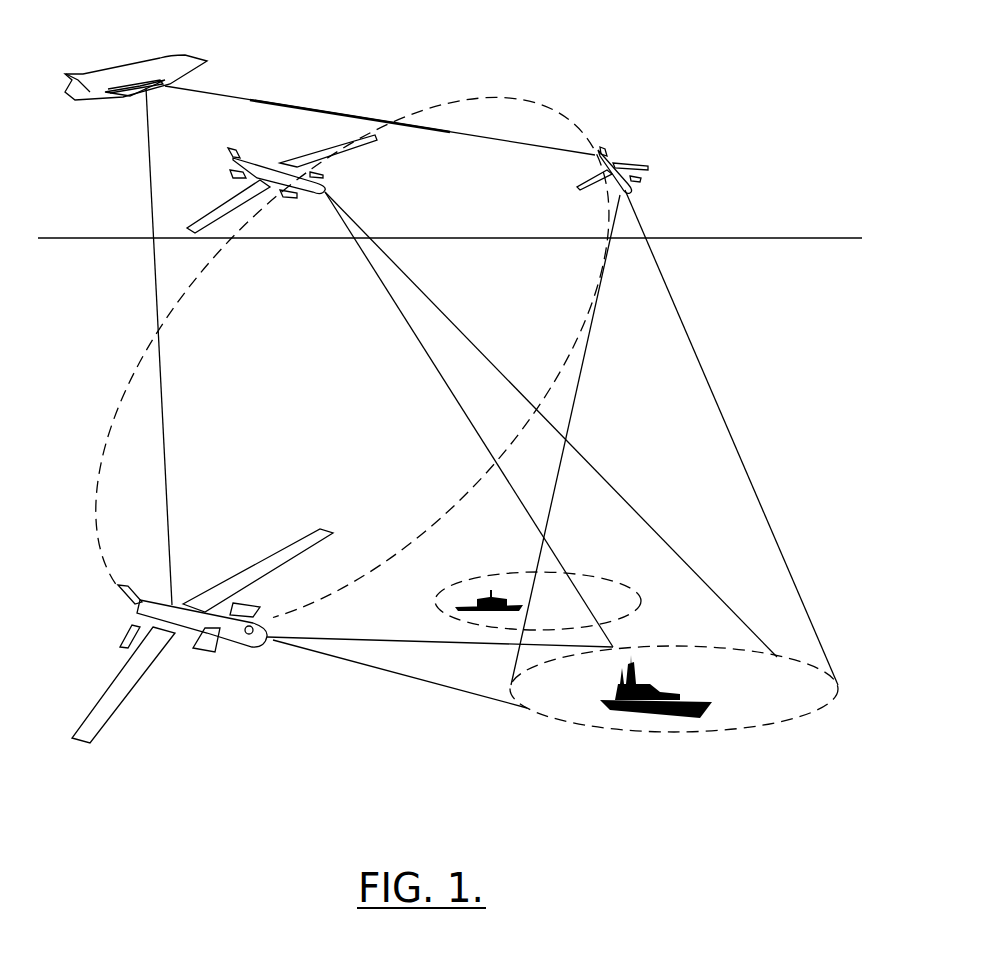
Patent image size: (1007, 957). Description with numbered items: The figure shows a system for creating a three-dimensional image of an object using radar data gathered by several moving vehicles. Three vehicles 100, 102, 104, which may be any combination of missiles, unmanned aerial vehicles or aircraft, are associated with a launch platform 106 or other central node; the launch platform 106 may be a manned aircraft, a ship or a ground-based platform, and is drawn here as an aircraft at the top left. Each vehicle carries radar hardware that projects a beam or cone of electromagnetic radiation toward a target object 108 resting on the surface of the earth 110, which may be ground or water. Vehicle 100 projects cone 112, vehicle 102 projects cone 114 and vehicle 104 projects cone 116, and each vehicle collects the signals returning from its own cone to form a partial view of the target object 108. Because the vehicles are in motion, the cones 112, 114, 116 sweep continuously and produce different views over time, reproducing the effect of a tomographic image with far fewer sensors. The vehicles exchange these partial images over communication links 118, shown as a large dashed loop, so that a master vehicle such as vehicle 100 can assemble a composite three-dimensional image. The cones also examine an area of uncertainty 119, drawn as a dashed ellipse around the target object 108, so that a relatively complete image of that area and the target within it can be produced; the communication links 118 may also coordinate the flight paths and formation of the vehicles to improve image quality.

The vehicle 100 is at (630, 167).
The vehicle 102 is at (283, 160).
The vehicle 104 is at (130, 627).
The launch platform 106 is at (118, 77).
The target object 108 is at (665, 690).
The surface of the earth 110 is at (571, 797).
The cone 112 is at (680, 310).
The cone 114 is at (470, 306).
The cone 116 is at (457, 689).
The communication links 118 is at (513, 100).
The area of uncertainty 119 is at (682, 733).